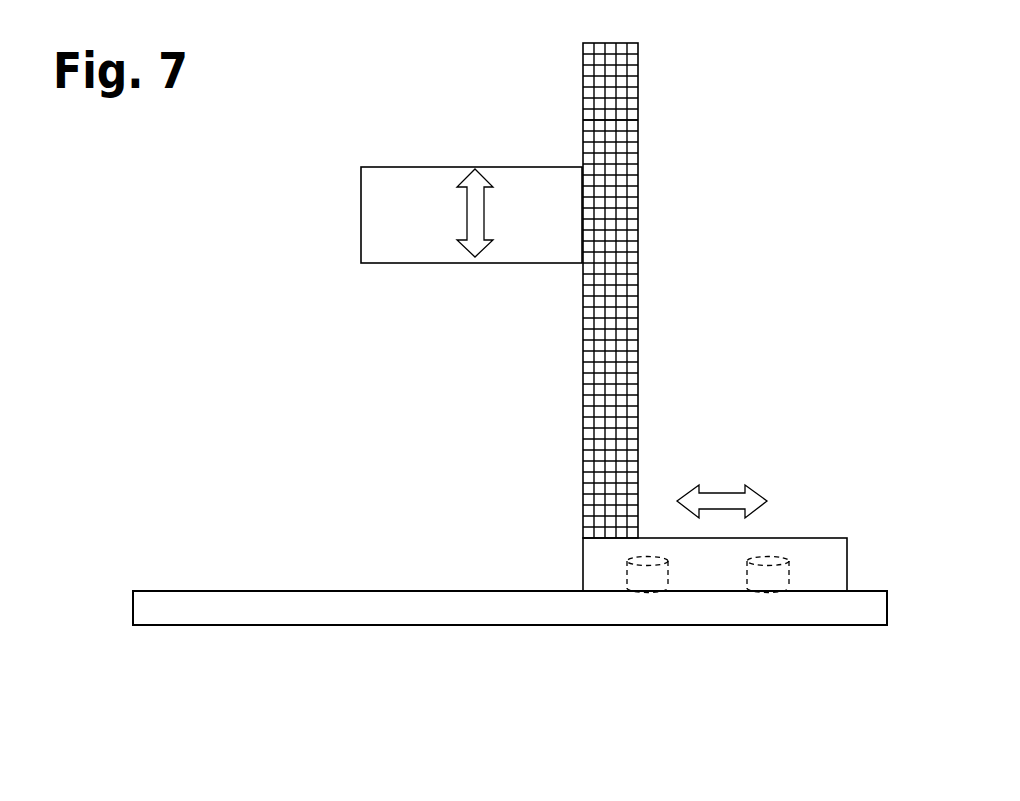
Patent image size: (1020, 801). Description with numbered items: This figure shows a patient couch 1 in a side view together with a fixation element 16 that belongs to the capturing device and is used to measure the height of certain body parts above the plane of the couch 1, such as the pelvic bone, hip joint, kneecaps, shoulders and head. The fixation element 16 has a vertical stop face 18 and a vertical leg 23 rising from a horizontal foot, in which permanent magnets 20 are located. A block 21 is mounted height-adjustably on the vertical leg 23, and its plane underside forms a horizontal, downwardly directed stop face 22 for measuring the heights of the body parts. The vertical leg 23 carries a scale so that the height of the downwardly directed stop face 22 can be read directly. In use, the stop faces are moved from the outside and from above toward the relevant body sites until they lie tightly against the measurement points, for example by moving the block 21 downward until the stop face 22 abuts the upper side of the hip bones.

The patient couch 1 is at (265, 608).
The fixation element 16 is at (668, 366).
The vertical stop face 18 is at (576, 398).
The permanent magnets 20 is at (770, 577).
The block 21 is at (407, 213).
The downwardly directed stop face 22 is at (455, 270).
The vertical leg 23 is at (603, 113).